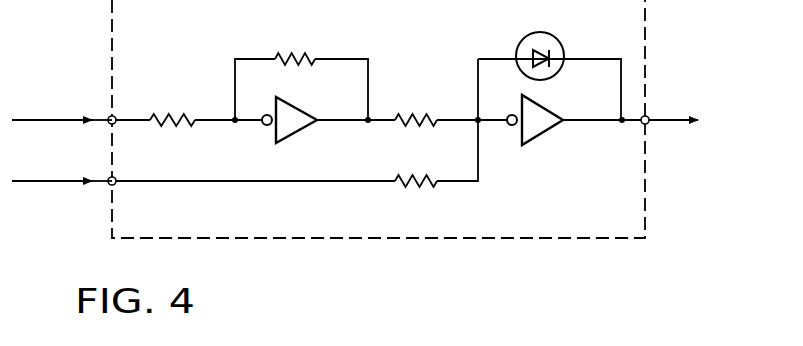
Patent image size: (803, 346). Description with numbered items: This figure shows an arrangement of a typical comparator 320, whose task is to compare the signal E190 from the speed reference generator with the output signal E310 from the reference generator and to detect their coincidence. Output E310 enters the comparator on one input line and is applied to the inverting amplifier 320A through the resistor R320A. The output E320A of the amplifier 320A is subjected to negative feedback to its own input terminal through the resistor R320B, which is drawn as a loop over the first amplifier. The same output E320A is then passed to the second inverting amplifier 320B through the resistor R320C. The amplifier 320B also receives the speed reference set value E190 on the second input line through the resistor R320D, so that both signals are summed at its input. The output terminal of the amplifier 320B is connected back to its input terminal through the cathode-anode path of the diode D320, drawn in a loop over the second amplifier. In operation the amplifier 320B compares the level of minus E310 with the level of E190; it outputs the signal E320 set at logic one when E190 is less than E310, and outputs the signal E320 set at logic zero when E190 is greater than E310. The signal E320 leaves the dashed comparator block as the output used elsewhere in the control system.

The comparator 320 is at (312, 243).
The inverting amplifier 320A is at (293, 103).
The inverting amplifier 320B is at (547, 103).
The resistor R320A is at (177, 104).
The resistor R320B is at (299, 44).
The resistor R320C is at (422, 103).
The resistor R320D is at (423, 197).
The diode D320 is at (537, 42).
The output signal E310 is at (62, 106).
The speed reference set value E190 is at (62, 166).
The output signal E320 is at (691, 106).
The output signal E320A is at (367, 122).